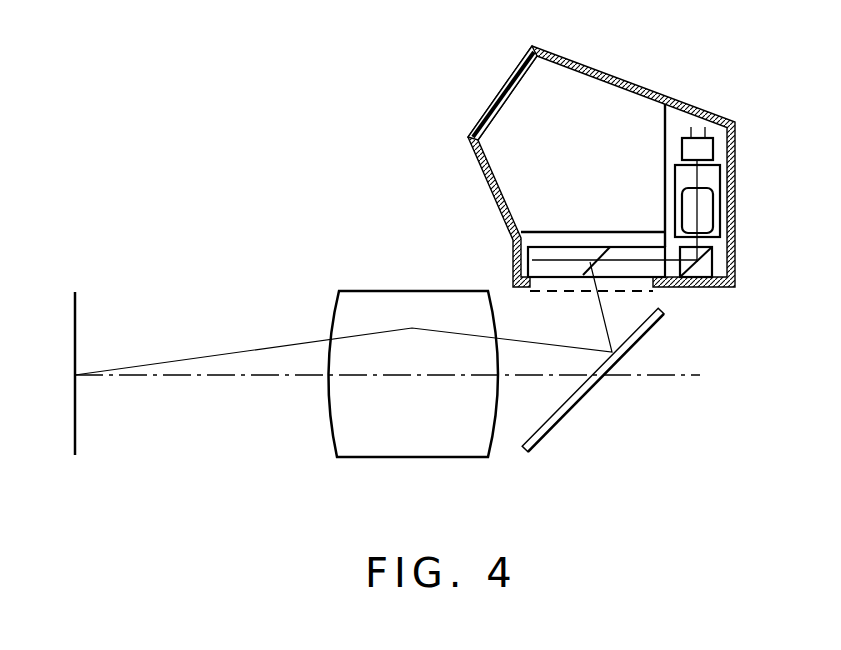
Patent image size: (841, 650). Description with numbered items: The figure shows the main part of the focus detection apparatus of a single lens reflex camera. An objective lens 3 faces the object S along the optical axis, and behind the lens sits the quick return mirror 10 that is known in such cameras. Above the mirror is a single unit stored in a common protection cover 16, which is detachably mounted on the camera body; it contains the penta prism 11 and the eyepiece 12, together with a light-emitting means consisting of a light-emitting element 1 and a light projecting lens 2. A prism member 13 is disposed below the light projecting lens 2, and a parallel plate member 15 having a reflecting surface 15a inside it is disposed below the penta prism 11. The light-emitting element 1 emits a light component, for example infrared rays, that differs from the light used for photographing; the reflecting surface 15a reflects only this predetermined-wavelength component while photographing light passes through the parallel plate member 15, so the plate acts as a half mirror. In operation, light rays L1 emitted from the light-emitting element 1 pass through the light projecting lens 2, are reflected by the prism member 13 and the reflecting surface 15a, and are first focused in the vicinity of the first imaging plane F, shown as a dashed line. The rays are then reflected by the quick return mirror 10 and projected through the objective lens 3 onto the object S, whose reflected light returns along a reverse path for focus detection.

The light-emitting element 1 is at (708, 145).
The light projecting lens 2 is at (705, 205).
The objective lens 3 is at (375, 297).
The quick return mirror 10 is at (555, 432).
The penta prism 11 is at (600, 100).
The eyepiece 12 is at (720, 220).
The prism member 13 is at (703, 268).
The parallel plate member 15 is at (538, 258).
The reflecting surface 15a is at (592, 250).
The common protection cover 16 is at (498, 92).
The first imaging plane F is at (577, 292).
The object S is at (78, 315).
The optical axis O is at (160, 378).
The light rays L1 is at (278, 344).